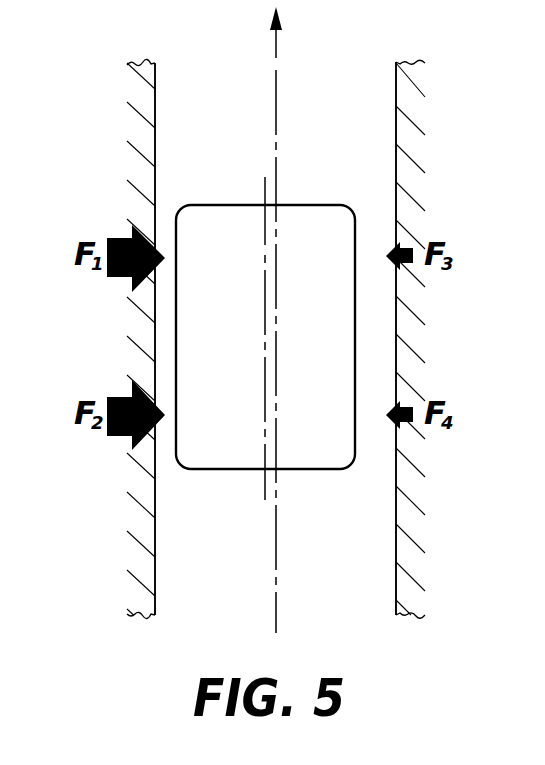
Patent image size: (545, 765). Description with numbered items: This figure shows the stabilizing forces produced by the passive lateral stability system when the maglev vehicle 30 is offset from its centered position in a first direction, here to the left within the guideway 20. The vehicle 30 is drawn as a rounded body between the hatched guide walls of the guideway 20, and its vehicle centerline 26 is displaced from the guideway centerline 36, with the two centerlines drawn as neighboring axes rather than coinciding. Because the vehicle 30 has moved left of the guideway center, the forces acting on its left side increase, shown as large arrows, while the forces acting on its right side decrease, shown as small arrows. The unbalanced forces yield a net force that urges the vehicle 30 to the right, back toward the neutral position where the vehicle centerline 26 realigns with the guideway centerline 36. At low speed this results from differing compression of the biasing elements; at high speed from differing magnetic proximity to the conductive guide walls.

The guideway 20 is at (161, 73).
The vehicle centerline 26 is at (277, 112).
The vehicle 30 is at (225, 470).
The guideway centerline 36 is at (264, 187).